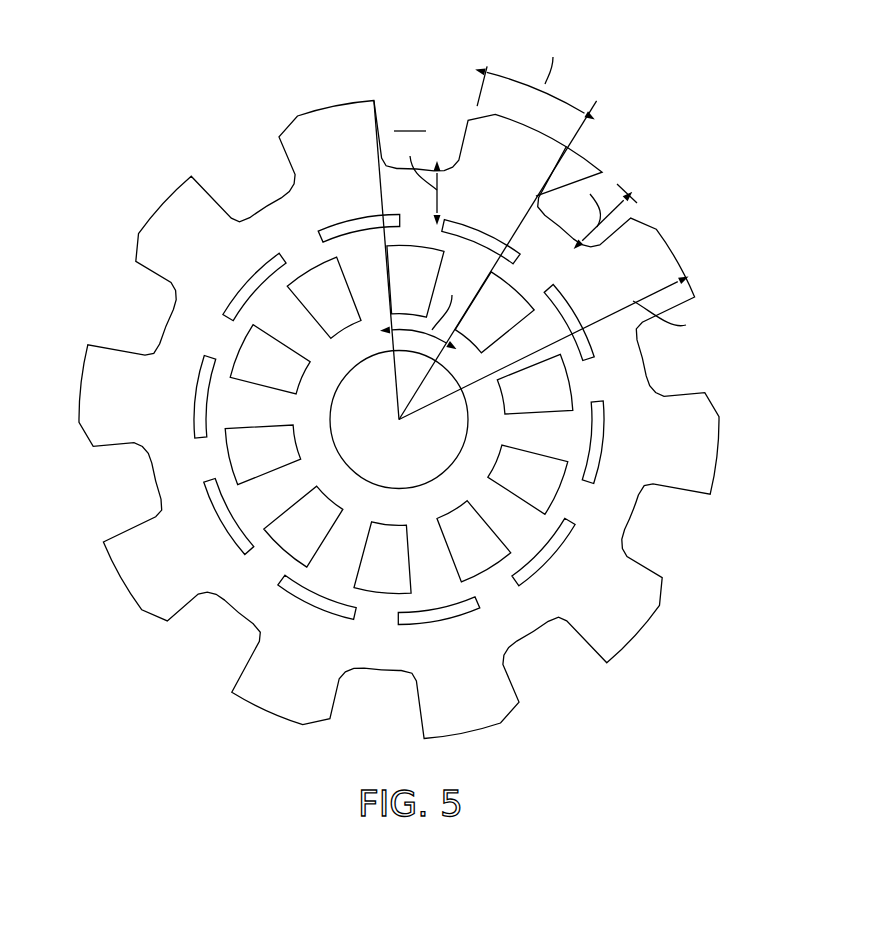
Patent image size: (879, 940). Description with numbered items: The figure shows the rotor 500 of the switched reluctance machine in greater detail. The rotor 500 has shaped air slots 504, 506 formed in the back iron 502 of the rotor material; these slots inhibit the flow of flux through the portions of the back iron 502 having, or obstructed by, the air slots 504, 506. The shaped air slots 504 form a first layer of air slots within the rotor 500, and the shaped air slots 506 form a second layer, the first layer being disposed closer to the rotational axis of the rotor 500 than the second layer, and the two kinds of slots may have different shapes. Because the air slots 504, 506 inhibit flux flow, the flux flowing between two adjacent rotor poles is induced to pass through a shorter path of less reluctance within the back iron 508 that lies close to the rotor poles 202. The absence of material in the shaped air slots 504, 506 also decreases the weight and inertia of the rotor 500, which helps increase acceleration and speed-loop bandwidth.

The rotor 500 is at (399, 388).
The rotor poles 202 is at (97, 394).
The back iron 502 is at (414, 519).
The shaped air slots 504 is at (233, 354).
The shaped air slots 506 is at (207, 508).
The back iron 508 is at (273, 221).